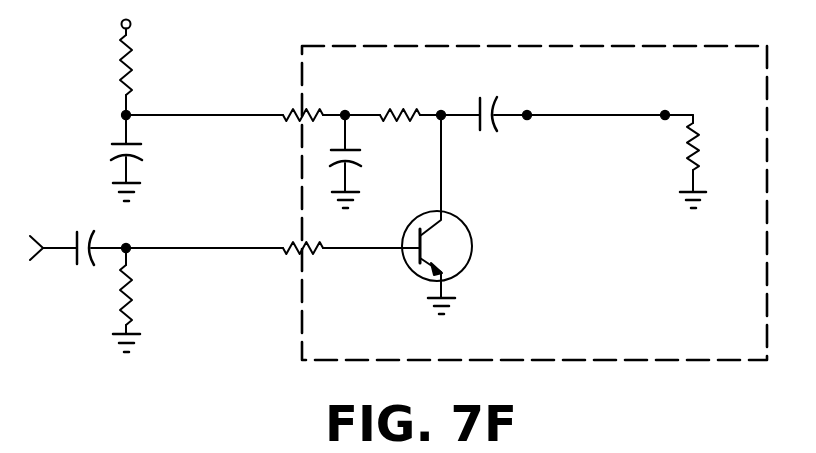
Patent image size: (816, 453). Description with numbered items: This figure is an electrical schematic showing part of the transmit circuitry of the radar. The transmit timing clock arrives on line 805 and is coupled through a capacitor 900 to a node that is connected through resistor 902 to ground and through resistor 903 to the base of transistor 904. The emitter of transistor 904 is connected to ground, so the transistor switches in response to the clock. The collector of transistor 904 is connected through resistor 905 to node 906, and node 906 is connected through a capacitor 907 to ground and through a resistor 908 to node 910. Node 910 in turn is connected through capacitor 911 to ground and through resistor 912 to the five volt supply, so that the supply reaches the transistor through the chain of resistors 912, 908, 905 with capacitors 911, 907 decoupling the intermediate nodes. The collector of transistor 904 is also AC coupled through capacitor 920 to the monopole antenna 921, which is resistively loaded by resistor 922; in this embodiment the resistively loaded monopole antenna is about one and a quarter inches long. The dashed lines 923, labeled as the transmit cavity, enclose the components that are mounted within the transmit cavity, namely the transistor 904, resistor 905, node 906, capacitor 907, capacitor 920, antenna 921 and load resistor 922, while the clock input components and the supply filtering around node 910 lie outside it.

The resistor 912 is at (124, 62).
The node 910 is at (124, 113).
The capacitor 911 is at (118, 144).
The line 805 is at (74, 242).
The capacitor 900 is at (78, 258).
The resistor 902 is at (134, 291).
The resistor 903 is at (300, 243).
The resistor 908 is at (300, 113).
The node 906 is at (364, 82).
The capacitor 907 is at (338, 150).
The resistor 905 is at (398, 108).
The capacitor 920 is at (500, 122).
The monopole antenna 921 is at (590, 113).
The resistor 922 is at (688, 148).
The transistor 904 is at (463, 226).
The dashed lines 923 is at (614, 271).